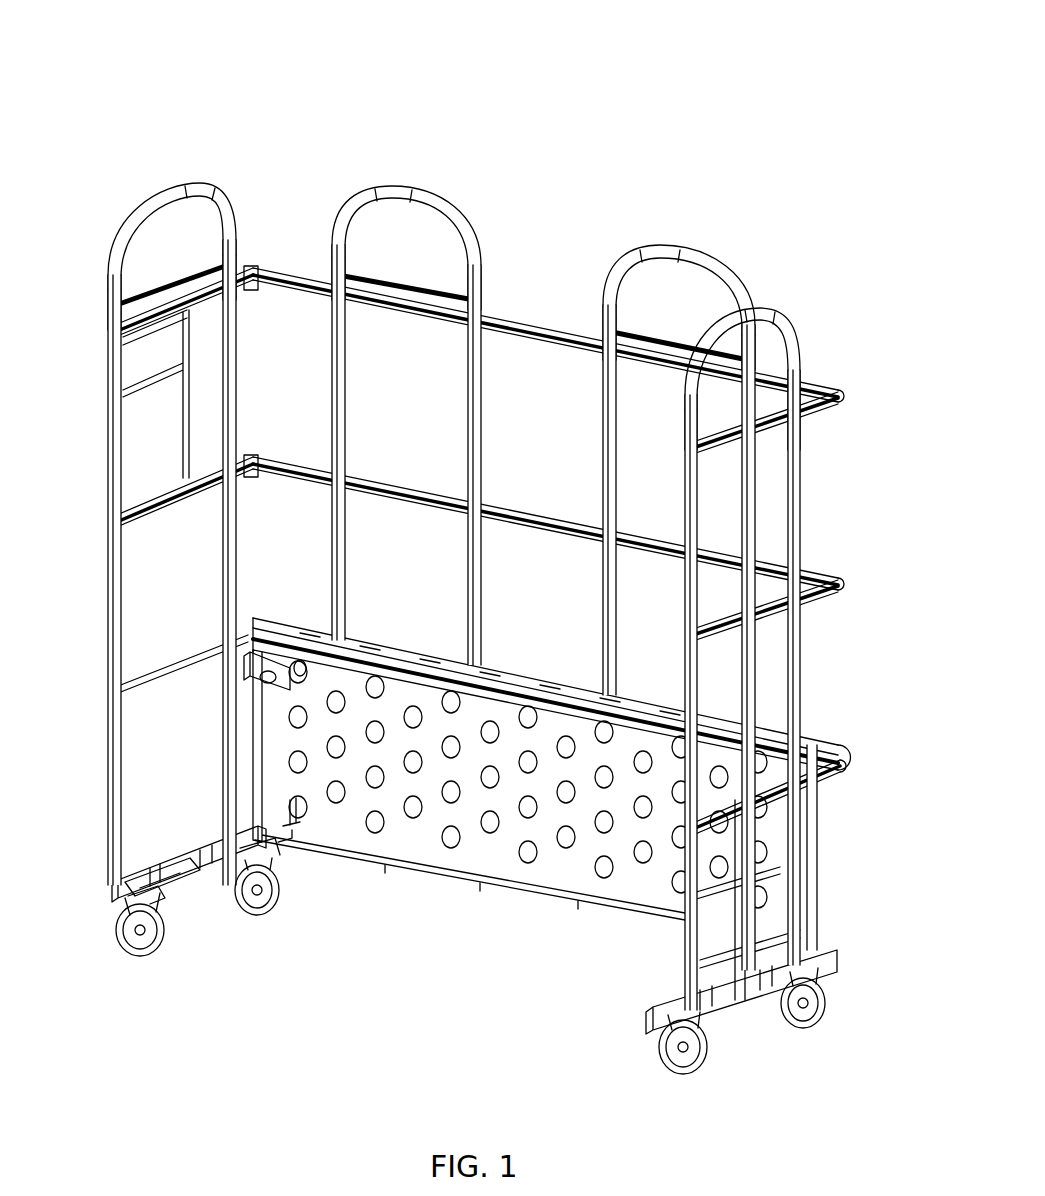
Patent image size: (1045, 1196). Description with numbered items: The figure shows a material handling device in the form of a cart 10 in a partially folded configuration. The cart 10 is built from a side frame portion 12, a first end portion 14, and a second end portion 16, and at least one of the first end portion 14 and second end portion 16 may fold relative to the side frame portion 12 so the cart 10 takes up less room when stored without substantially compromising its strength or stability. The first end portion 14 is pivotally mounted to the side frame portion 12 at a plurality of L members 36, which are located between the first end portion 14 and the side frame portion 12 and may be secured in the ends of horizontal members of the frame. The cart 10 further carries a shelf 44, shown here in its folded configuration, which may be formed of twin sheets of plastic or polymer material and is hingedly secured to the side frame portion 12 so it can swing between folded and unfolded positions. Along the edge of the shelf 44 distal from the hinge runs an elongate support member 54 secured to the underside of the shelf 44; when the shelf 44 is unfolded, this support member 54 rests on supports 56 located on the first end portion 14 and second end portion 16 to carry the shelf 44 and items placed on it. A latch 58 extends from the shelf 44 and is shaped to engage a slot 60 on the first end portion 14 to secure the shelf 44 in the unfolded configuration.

The cart 10 is at (556, 140).
The side frame portion 12 is at (568, 335).
The first end portion 14 is at (178, 305).
The second end portion 16 is at (762, 435).
The L member 36 is at (277, 270).
The shelf 44 is at (503, 712).
The elongate support member 54 is at (387, 668).
The support 56 is at (173, 897).
The latch 58 is at (250, 688).
The slot 60 is at (152, 877).